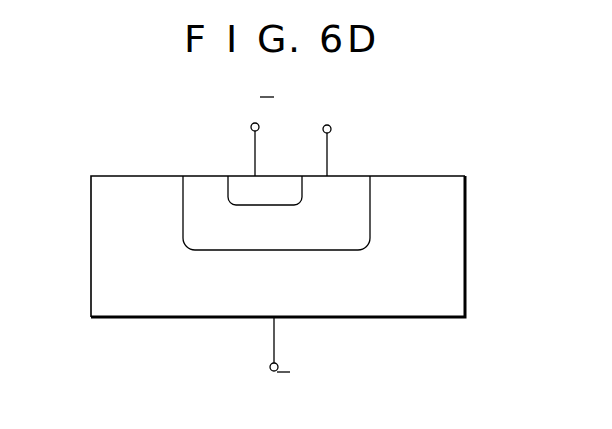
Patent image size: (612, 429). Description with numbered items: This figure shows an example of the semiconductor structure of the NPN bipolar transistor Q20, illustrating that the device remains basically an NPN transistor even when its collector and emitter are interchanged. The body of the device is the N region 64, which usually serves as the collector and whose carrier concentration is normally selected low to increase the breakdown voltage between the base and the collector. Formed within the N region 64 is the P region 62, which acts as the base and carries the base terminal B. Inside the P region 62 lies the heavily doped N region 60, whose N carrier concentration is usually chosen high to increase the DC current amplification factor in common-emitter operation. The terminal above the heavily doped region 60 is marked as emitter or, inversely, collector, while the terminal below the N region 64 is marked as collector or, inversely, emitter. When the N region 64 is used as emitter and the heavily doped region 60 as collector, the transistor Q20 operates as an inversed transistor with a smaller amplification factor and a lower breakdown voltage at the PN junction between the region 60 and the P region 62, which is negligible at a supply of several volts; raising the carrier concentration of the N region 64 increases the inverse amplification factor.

The transistor Q20 is at (467, 243).
The N+ region 60 is at (241, 185).
The P region 62 is at (350, 195).
The N region 64 is at (450, 285).